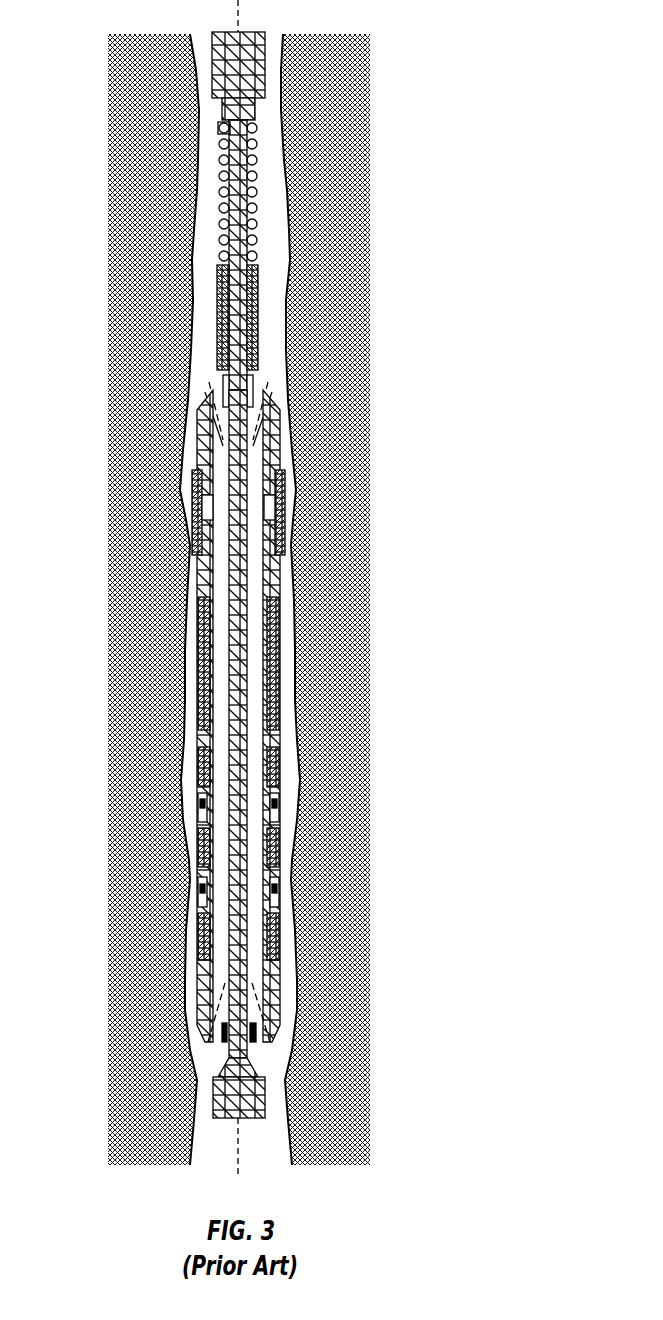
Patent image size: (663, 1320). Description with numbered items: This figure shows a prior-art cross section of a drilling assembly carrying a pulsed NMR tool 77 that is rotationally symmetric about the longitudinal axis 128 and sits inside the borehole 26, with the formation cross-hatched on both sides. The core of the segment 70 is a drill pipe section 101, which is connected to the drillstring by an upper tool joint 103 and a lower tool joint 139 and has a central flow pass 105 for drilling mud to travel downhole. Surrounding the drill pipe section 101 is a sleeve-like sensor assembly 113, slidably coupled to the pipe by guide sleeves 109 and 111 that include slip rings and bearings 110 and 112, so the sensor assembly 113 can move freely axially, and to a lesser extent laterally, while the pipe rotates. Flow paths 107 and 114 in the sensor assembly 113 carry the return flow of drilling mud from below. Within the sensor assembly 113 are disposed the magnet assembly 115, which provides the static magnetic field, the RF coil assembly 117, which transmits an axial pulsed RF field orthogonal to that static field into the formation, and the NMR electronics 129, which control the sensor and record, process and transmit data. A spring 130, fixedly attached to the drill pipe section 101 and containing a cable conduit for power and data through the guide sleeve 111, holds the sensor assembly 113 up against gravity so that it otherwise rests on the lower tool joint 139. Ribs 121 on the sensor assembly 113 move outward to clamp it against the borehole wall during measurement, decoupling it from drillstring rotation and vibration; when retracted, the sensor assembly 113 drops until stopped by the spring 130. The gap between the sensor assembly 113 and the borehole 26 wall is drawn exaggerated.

The borehole 26 is at (290, 433).
The segment of drill pipe 70 is at (170, 289).
The pulsed NMR tool 77 is at (288, 708).
The drill pipe section 101 is at (255, 158).
The upper tool joint 103 is at (220, 63).
The flow pass 105 is at (233, 222).
The flow path 107 is at (222, 748).
The guide sleeve 109 is at (263, 1047).
The slip rings and bearings 110 is at (257, 1028).
The guide sleeve 111 is at (258, 320).
The slip rings and bearings 112 is at (247, 388).
The sensor assembly 113 is at (273, 572).
The flow path 114 is at (252, 803).
The magnet assembly 115 is at (280, 768).
The RF coil assembly 117 is at (200, 850).
The ribs 121 is at (188, 500).
The longitudinal axis 128 is at (237, 1152).
The NMR electronics 129 is at (200, 617).
The spring 130 is at (230, 145).
The lower tool joint 139 is at (260, 1100).